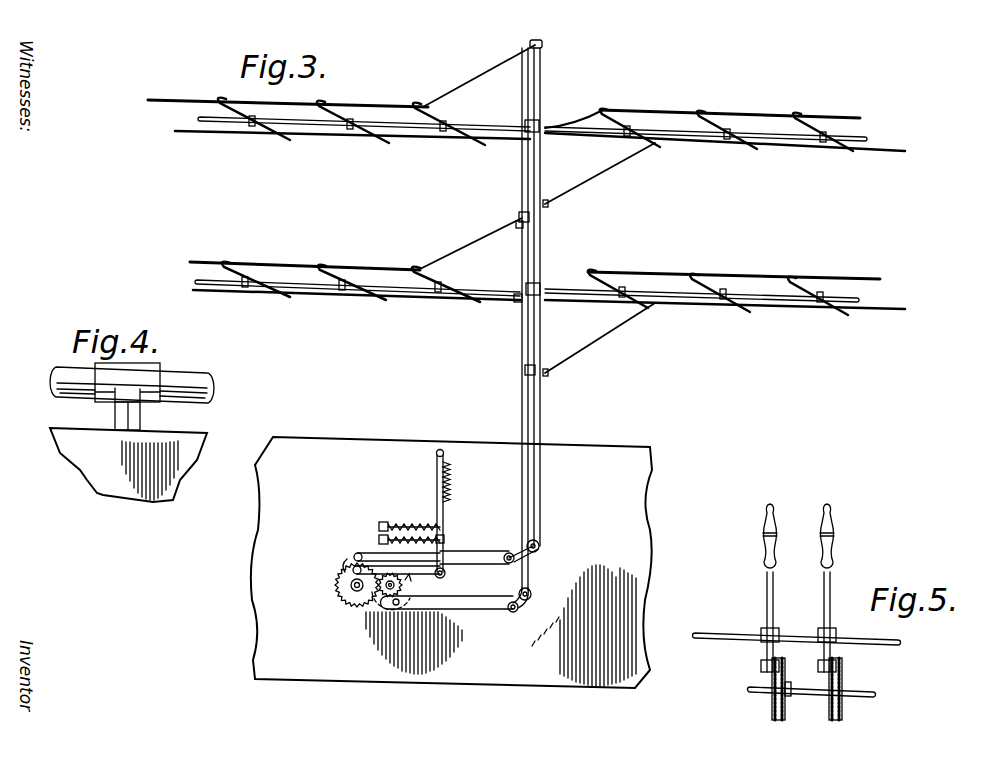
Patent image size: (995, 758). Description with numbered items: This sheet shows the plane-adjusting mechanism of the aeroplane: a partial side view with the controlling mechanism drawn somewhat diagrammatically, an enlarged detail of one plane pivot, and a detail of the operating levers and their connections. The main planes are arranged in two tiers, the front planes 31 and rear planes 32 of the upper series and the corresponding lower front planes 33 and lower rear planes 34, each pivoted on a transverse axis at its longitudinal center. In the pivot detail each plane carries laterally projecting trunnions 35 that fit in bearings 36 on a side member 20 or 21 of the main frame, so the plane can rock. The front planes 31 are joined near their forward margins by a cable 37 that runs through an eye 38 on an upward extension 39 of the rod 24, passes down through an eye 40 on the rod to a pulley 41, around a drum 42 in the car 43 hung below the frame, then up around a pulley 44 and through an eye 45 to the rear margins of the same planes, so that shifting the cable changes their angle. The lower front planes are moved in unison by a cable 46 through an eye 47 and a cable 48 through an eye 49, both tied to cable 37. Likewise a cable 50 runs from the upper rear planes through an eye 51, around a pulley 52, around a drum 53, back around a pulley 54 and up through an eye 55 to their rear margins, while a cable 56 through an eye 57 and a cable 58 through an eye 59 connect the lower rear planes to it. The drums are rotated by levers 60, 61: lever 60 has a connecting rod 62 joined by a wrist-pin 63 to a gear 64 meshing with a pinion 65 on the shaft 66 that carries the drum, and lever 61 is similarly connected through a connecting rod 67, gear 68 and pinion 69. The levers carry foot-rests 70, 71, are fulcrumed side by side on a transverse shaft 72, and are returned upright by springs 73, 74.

In FIG. 3, the side member 20 is at (405, 133).
In FIG. 4, the side member 20 is at (204, 373).
In FIG. 3, the side member 21 is at (403, 292).
In FIG. 3, the rod 24 is at (543, 140).
In FIG. 3, the front planes of the upper series 31 is at (270, 136).
In FIG. 4, the front planes of the upper series 31 is at (194, 452).
In FIG. 3, the rear planes of the upper series 32 is at (613, 112).
In FIG. 3, the lower front planes 33 is at (240, 266).
In FIG. 3, the lower rear planes 34 is at (617, 273).
In FIG. 4, the trunnions 35 is at (143, 421).
In FIG. 3, the bearings 36 is at (250, 125).
In FIG. 4, the bearings 36 is at (115, 403).
In FIG. 3, the cable 37 is at (303, 103).
In FIG. 3, the eye 38 is at (527, 48).
In FIG. 3, the upward extension 39 is at (540, 84).
In FIG. 3, the eye 40 is at (520, 217).
In FIG. 3, the pulley 41 is at (508, 554).
In FIG. 3, the drum 42 is at (401, 597).
In FIG. 3, the car 43 is at (522, 668).
In FIG. 3, the pulley 44 is at (512, 610).
In FIG. 3, the eye 45 is at (525, 131).
In FIG. 3, the cable 46 is at (398, 268).
In FIG. 3, the eye 47 is at (518, 226).
In FIG. 3, the cable 48 is at (321, 298).
In FIG. 3, the eye 49 is at (515, 298).
In FIG. 3, the cable 50 is at (672, 112).
In FIG. 3, the eye 51 is at (560, 117).
In FIG. 3, the pulley 52 is at (539, 542).
In FIG. 3, the drum 53 is at (387, 551).
In FIG. 3, the pulley 54 is at (530, 590).
In FIG. 3, the eye 55 is at (548, 203).
In FIG. 3, the cable 56 is at (670, 273).
In FIG. 3, the eye 57 is at (548, 293).
In FIG. 3, the cable 58 is at (603, 333).
In FIG. 3, the eye 59 is at (550, 372).
In FIG. 3, the lever 60 is at (440, 508).
In FIG. 5, the lever 60 is at (774, 600).
In FIG. 3, the lever 61 is at (437, 455).
In FIG. 5, the lever 61 is at (833, 592).
In FIG. 3, the connecting rod 62 is at (404, 582).
In FIG. 3, the wrist-pin 63 is at (353, 571).
In FIG. 3, the gear 64 is at (350, 588).
In FIG. 3, the pinion 65 is at (383, 603).
In FIG. 3, the shaft 66 is at (382, 592).
In FIG. 5, the shaft 66 is at (779, 664).
In FIG. 3, the connecting rod 67 is at (357, 556).
In FIG. 3, the gear 68 is at (347, 559).
In FIG. 5, the pinion 69 is at (842, 662).
In FIG. 5, the foot-rest 70 is at (766, 543).
In FIG. 5, the foot-rest 71 is at (834, 541).
In FIG. 3, the transverse shaft 72 is at (443, 537).
In FIG. 5, the transverse shaft 72 is at (729, 642).
In FIG. 3, the spring 73 is at (383, 524).
In FIG. 3, the spring 74 is at (403, 528).